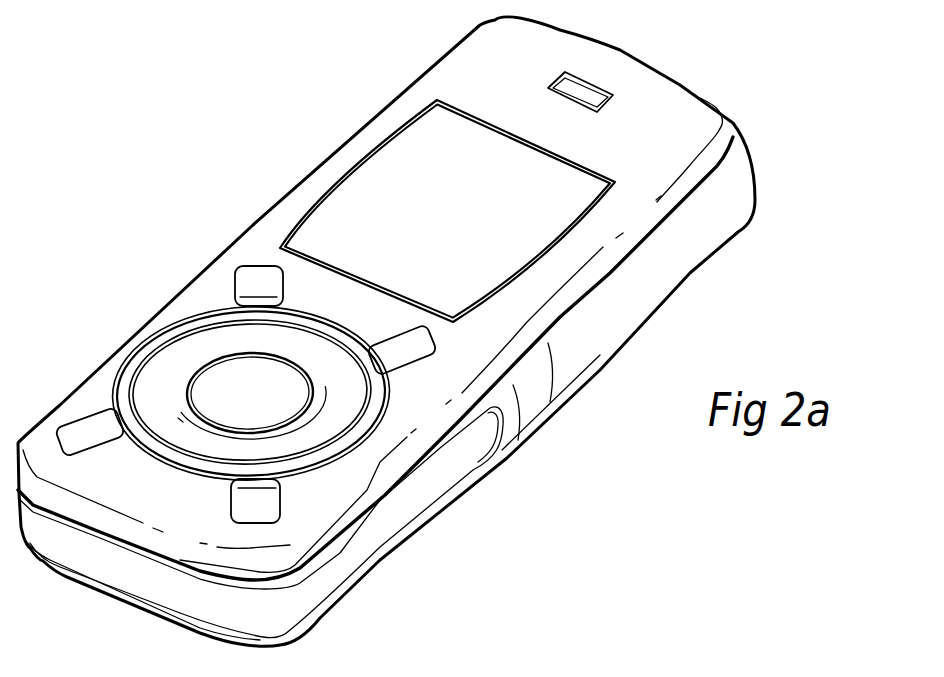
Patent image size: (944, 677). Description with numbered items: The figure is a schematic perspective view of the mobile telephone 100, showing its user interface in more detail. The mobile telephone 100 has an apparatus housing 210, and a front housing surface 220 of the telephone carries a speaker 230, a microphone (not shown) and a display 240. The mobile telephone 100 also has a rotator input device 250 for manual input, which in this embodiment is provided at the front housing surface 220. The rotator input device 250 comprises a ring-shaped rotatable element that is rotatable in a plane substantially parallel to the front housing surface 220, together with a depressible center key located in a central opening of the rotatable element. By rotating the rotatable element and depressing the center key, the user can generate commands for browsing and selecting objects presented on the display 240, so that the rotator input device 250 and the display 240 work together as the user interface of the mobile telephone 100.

The mobile telephone 100 is at (221, 123).
The apparatus housing 210 is at (688, 264).
The front housing surface 220 is at (688, 105).
The speaker 230 is at (581, 90).
The display 240 is at (390, 173).
The rotator input device 250 is at (210, 388).